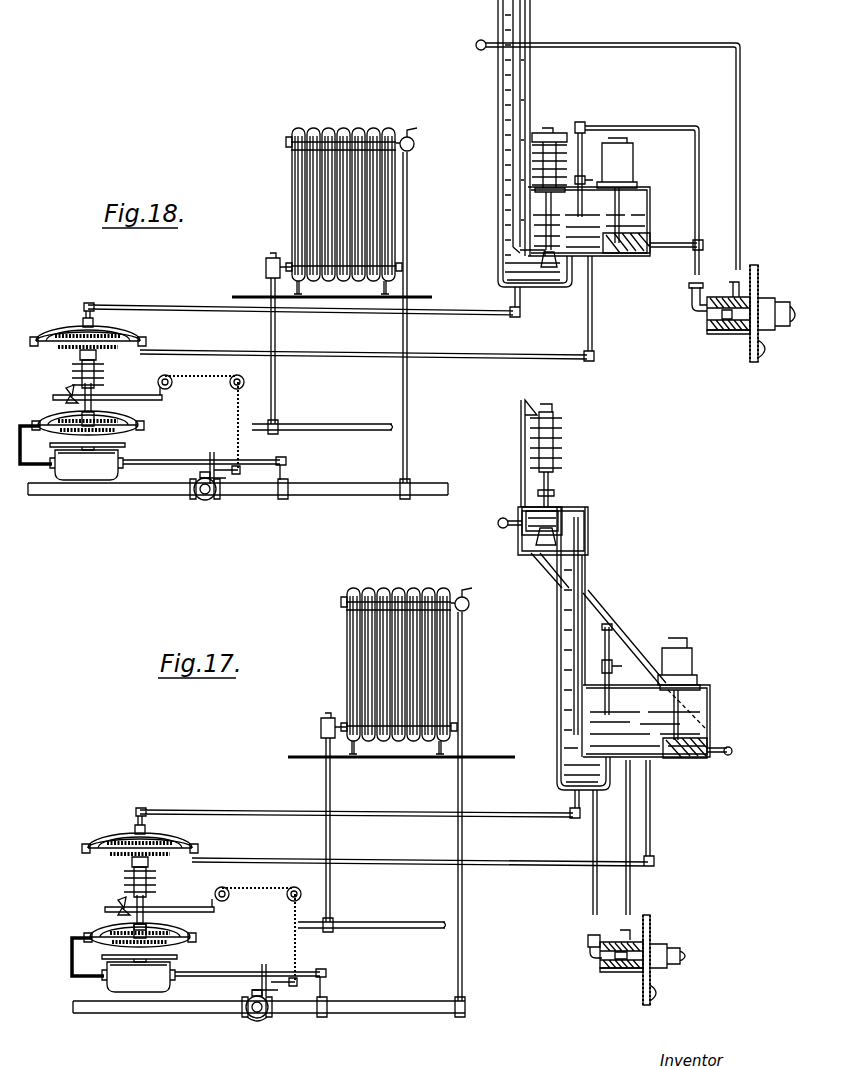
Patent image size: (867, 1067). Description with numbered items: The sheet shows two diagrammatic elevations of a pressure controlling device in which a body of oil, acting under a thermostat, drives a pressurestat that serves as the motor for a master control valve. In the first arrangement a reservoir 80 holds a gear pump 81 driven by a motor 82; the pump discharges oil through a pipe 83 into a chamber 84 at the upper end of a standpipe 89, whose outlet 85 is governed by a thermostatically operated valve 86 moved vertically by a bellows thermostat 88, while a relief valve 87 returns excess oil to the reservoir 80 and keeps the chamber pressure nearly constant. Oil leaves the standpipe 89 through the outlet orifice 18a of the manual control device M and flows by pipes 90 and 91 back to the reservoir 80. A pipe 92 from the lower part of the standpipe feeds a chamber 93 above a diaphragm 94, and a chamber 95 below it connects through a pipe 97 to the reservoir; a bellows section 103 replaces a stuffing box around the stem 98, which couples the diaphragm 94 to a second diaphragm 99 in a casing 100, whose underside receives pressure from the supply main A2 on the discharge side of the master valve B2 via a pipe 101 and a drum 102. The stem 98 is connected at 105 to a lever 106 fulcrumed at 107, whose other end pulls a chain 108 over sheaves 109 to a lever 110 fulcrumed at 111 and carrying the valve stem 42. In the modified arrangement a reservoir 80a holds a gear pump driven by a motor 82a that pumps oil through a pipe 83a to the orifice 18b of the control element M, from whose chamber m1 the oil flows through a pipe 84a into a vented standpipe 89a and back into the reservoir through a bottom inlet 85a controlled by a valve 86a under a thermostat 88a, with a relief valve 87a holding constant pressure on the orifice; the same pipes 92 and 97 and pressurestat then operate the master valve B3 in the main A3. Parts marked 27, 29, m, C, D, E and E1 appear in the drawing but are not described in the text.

In FIG. 17, the outlet port or orifice 18a is at (620, 970).
In FIG. 18, the outlet port or orifice 18b is at (716, 332).
In FIG. 18, the valve stem nut 27 is at (792, 324).
In FIG. 17, the valve stem nut 27 is at (688, 960).
In FIG. 18, the lever 29 is at (766, 356).
In FIG. 17, the lever 29 is at (660, 994).
In FIG. 17, the stem 42 is at (247, 1019).
In FIG. 17, the supply tank or reservoir 80 is at (646, 721).
In FIG. 18, the supply tank or reservoir 80a is at (589, 221).
In FIG. 18, the pump 81 is at (640, 255).
In FIG. 17, the pump 81 is at (690, 759).
In FIG. 17, the motor 82 is at (679, 689).
In FIG. 18, the motor 82a is at (633, 165).
In FIG. 17, the pipe 83 is at (592, 611).
In FIG. 18, the pipe 83a is at (700, 191).
In FIG. 17, the chamber 84 is at (524, 512).
In FIG. 18, the pipe 84a is at (630, 44).
In FIG. 17, the outlet 85 is at (550, 532).
In FIG. 18, the bottom inlet 85a is at (536, 249).
In FIG. 17, the thermostatically operated valve 86 is at (520, 537).
In FIG. 18, the thermostatically operated valve 86a is at (549, 268).
In FIG. 17, the relief valve 87 is at (611, 664).
In FIG. 18, the relief valve 87a is at (580, 176).
In FIG. 17, the thermostat 88 is at (562, 440).
In FIG. 18, the thermostat 88a is at (557, 150).
In FIG. 17, the standpipe 89 is at (558, 672).
In FIG. 18, the vented standpipe 89a is at (503, 27).
In FIG. 17, the pipe 90 is at (593, 841).
In FIG. 17, the pipe 91 is at (626, 839).
In FIG. 18, the pipe 92 is at (478, 306).
In FIG. 17, the pipe 92 is at (514, 810).
In FIG. 18, the chamber 93 is at (110, 337).
In FIG. 17, the chamber 93 is at (142, 835).
In FIG. 18, the diaphragm 94 is at (52, 330).
In FIG. 17, the diaphragm 94 is at (131, 833).
In FIG. 18, the chamber 95 is at (78, 356).
In FIG. 17, the chamber 95 is at (124, 870).
In FIG. 18, the pipe 97 is at (515, 352).
In FIG. 17, the pipe 97 is at (530, 860).
In FIG. 18, the stem 98 is at (92, 395).
In FIG. 17, the stem 98 is at (161, 904).
In FIG. 18, the diaphragm 99 is at (126, 430).
In FIG. 17, the diaphragm 99 is at (148, 938).
In FIG. 18, the casing 100 is at (50, 418).
In FIG. 17, the casing 100 is at (128, 926).
In FIG. 18, the pipe 101 is at (182, 459).
In FIG. 17, the pipe 101 is at (232, 969).
In FIG. 18, the drum 102 is at (86, 465).
In FIG. 17, the drum 102 is at (138, 977).
In FIG. 18, the bellows section 103 is at (104, 372).
In FIG. 17, the bellows section 103 is at (158, 880).
In FIG. 17, the connection 105 is at (148, 910).
In FIG. 18, the lever 106 is at (138, 400).
In FIG. 17, the lever 106 is at (142, 902).
In FIG. 18, the fulcrum 107 is at (68, 391).
In FIG. 17, the fulcrum 107 is at (110, 899).
In FIG. 18, the chain 108 is at (201, 413).
In FIG. 17, the chain 108 is at (258, 924).
In FIG. 18, the sheaves 109 is at (164, 377).
In FIG. 17, the sheaves 109 is at (261, 884).
In FIG. 18, the lever 110 is at (240, 472).
In FIG. 17, the lever 110 is at (294, 990).
In FIG. 18, the fulcrum point 111 is at (200, 478).
In FIG. 17, the fulcrum point 111 is at (243, 980).
In FIG. 17, the supply main A2 is at (182, 1008).
In FIG. 18, the supply main A3 is at (160, 488).
In FIG. 17, the master control valve B2 is at (257, 1019).
In FIG. 18, the master control valve B3 is at (205, 501).
In FIG. 18, the pipe C is at (408, 258).
In FIG. 17, the pipe C is at (463, 717).
In FIG. 18, the radiator D is at (291, 205).
In FIG. 17, the radiator D is at (346, 675).
In FIG. 18, the pipe E is at (364, 424).
In FIG. 17, the pipe E is at (397, 922).
In FIG. 18, the pipe E1 is at (276, 346).
In FIG. 17, the pipe E1 is at (331, 884).
In FIG. 18, the manual control device M is at (759, 290).
In FIG. 17, the manual control device M is at (651, 940).
In FIG. 18, the part m is at (708, 332).
In FIG. 17, the part m is at (600, 973).
In FIG. 18, the chamber m1 is at (728, 331).
In FIG. 17, the chamber m1 is at (628, 967).